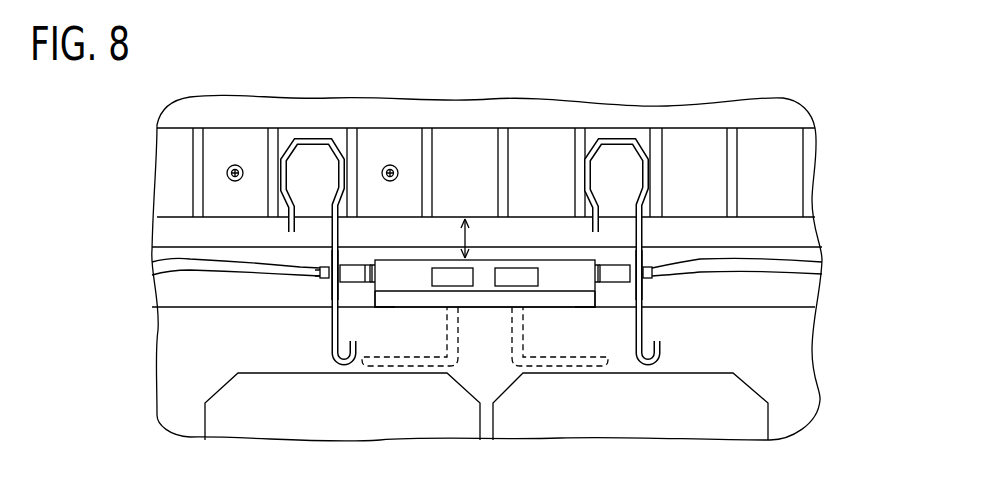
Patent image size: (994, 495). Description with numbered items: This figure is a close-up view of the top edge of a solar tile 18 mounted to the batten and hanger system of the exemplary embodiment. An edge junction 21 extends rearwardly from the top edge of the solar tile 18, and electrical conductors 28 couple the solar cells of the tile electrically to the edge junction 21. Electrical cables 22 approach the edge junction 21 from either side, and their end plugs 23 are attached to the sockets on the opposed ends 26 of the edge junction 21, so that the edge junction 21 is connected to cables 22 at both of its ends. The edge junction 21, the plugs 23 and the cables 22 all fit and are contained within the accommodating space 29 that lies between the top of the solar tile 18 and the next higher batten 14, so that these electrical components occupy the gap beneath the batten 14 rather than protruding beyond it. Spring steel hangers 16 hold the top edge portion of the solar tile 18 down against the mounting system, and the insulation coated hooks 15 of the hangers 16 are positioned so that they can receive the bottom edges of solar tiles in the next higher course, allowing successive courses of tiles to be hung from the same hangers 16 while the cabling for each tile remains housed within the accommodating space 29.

The batten 14 is at (770, 173).
The insulation coated hooks 15 is at (330, 350).
The spring steel hangers 16 is at (331, 291).
The solar tile 18 is at (782, 368).
The edge junction 21 is at (563, 260).
The electrical cables 22 is at (190, 268).
The end plugs 23 is at (353, 265).
The opposed ends 26 is at (375, 297).
The electrical conductors 28 is at (413, 358).
The accommodating space 29 is at (468, 236).